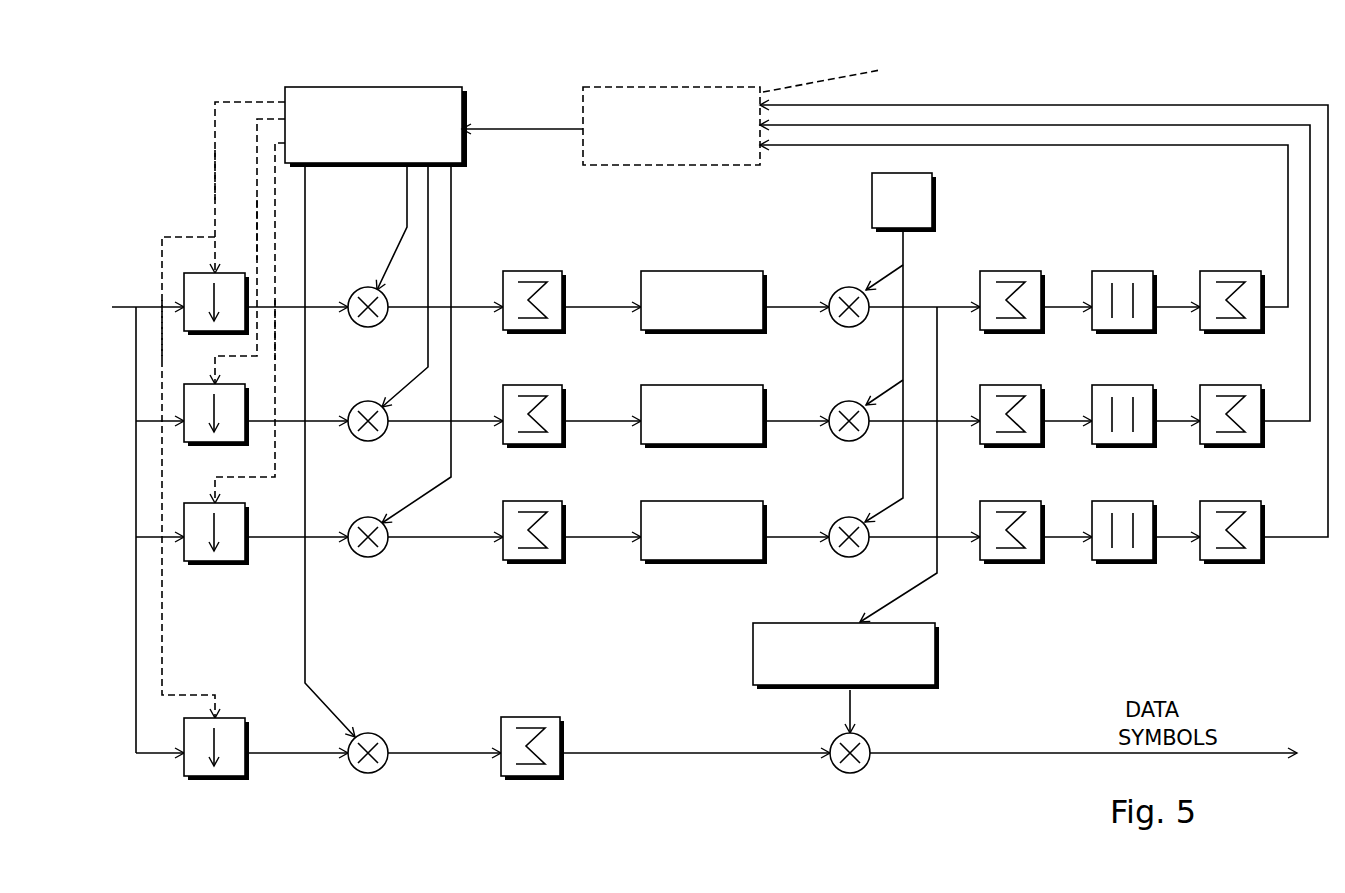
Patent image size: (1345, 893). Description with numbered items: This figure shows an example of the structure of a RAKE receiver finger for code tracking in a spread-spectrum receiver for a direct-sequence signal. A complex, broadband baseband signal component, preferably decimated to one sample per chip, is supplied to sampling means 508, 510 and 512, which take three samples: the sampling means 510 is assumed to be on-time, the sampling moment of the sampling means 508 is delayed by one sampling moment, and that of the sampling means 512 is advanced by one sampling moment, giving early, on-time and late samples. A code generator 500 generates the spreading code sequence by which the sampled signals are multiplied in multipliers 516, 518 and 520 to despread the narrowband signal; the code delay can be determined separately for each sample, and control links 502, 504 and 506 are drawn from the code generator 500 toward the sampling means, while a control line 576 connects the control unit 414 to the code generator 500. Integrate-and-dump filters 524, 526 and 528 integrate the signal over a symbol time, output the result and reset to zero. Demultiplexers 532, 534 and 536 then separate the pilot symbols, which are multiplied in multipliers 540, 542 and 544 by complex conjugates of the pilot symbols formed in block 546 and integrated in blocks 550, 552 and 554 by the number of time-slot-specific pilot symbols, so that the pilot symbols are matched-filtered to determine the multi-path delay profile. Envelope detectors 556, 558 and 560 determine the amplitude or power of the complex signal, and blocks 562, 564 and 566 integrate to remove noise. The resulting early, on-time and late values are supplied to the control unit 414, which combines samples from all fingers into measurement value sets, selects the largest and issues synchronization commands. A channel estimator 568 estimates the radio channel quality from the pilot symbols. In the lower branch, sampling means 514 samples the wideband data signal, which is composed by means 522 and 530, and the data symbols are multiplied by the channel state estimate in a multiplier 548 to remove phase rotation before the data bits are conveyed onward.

The code generator 500 is at (380, 87).
The control unit 414 is at (697, 87).
The control signal line 576 is at (515, 129).
The block forming complex conjugates of pilot symbols 546 is at (933, 213).
The channel estimator 568 is at (937, 648).
The control line to first decimator 502 is at (215, 118).
The control line to second decimator 504 is at (255, 237).
The control line to third decimator 506 is at (277, 282).
The sampling means 508 is at (183, 273).
The sampling means 510 is at (217, 453).
The sampling means 512 is at (197, 567).
The sampling means 514 is at (205, 787).
The first multiplier 516 is at (375, 327).
The second multiplier 518 is at (375, 441).
The third multiplier 520 is at (375, 557).
The means for composing data signal 522 is at (375, 772).
The integrate-and-dump filter 524 is at (526, 270).
The integrate-and-dump filter 526 is at (545, 445).
The integrate-and-dump filter 528 is at (545, 563).
The means for composing data signal 530 is at (545, 787).
The demultiplexer 532 is at (695, 270).
The demultiplexer 534 is at (753, 382).
The demultiplexer 536 is at (700, 568).
The multiplier 540 is at (860, 290).
The multiplier 542 is at (838, 440).
The multiplier 544 is at (890, 572).
The multiplier 548 is at (858, 772).
The integration block 550 is at (1002, 272).
The integration block 552 is at (982, 383).
The integration block 554 is at (1010, 565).
The envelope detector 556 is at (1113, 272).
The envelope detector 558 is at (1122, 383).
The envelope detector 560 is at (1120, 565).
The integration block 562 is at (1203, 272).
The integration block 564 is at (1200, 452).
The integration block 566 is at (1215, 565).